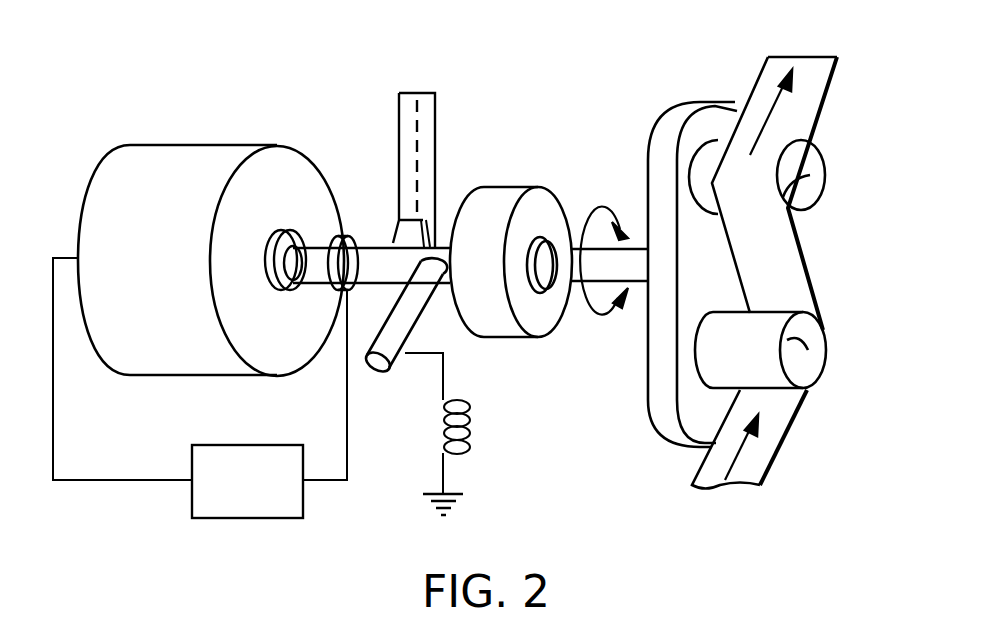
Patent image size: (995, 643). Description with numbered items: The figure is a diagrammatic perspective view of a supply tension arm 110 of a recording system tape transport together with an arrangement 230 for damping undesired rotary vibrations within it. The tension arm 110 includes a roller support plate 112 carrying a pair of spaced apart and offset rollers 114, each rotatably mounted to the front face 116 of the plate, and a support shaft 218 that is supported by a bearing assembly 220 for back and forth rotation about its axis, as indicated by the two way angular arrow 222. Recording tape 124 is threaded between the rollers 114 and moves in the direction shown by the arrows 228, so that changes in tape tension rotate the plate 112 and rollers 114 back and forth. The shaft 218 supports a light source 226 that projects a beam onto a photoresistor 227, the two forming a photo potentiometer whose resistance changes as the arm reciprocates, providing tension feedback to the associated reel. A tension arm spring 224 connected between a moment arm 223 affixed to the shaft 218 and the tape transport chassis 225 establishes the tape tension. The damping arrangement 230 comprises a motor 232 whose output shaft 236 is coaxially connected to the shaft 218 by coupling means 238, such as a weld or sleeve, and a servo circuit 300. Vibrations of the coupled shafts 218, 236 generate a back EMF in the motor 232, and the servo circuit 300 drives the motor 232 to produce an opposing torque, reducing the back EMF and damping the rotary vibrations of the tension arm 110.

The supply tension arm 110 is at (667, 252).
The roller support plate 112 is at (653, 422).
The rollers 114 is at (778, 317).
The front face 116 is at (717, 117).
The recording tape 124 is at (777, 418).
The support shaft 218 is at (382, 262).
The bearing assembly 220 is at (503, 187).
The two way angular arrow 222 is at (603, 209).
The moment arm 223 is at (407, 328).
The tension arm spring 224 is at (472, 437).
The tape transport chassis 225 is at (453, 502).
The light source 226 is at (433, 247).
The photoresistor 227 is at (399, 122).
The arrows 228 is at (822, 57).
The damping arrangement 230 is at (194, 247).
The motor 232 is at (195, 378).
The output shaft 236 is at (318, 257).
The coupling means 238 is at (333, 292).
The servo circuit 300 is at (232, 445).